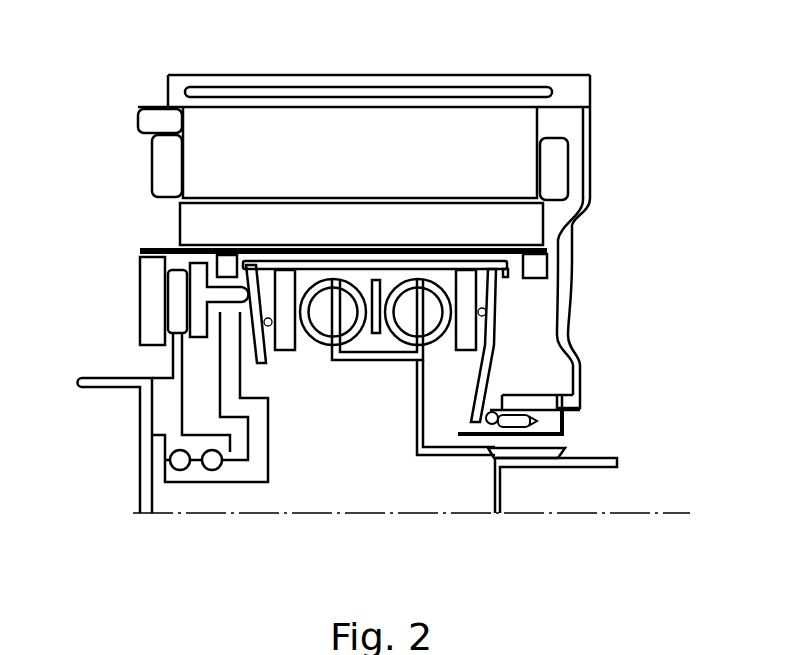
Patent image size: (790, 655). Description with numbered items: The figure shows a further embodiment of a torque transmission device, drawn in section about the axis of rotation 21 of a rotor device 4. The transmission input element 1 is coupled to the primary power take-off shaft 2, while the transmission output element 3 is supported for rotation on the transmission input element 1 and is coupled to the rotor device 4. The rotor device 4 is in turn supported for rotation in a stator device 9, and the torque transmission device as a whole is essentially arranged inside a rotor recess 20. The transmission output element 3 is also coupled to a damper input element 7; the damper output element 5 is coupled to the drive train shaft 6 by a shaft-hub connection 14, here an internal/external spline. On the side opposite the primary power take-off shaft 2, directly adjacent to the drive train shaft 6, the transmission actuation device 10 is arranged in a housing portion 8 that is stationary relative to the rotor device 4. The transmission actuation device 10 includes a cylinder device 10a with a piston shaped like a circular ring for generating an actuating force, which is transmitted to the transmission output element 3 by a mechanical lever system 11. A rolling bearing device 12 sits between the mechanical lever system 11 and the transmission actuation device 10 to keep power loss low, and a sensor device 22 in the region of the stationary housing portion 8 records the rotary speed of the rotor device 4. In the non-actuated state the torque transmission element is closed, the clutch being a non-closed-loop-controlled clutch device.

The transmission input element 1 is at (158, 378).
The primary power take-off shaft 2 is at (108, 388).
The transmission output element 3 is at (142, 247).
The rotor device 4 is at (180, 222).
The damper output element 5 is at (413, 437).
The drive train shaft 6 is at (610, 457).
The damper input element 7 is at (372, 280).
The housing portion 8 is at (583, 220).
The stator device 9 is at (460, 123).
The transmission actuation device 10 is at (517, 391).
The cylinder device 10a is at (537, 422).
The mechanical lever system 11 is at (495, 312).
The rolling bearing device 12 is at (480, 430).
The shaft-hub connection 14 is at (527, 471).
The rotor recess 20 is at (128, 311).
The axis of rotation 21 is at (217, 513).
The sensor device 22 is at (560, 258).